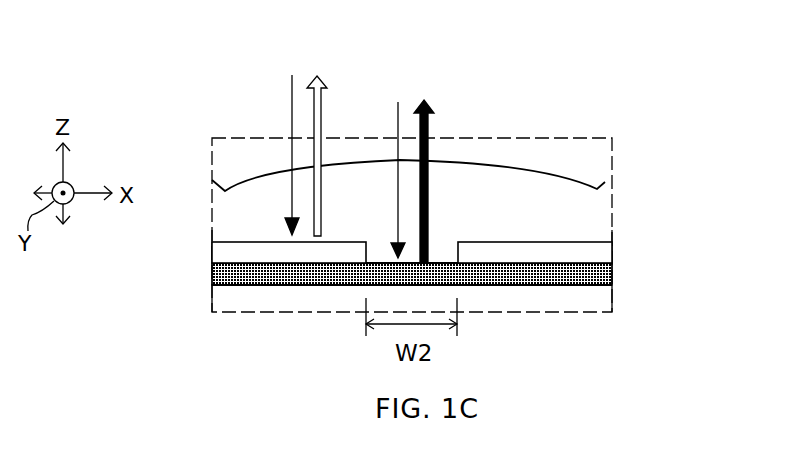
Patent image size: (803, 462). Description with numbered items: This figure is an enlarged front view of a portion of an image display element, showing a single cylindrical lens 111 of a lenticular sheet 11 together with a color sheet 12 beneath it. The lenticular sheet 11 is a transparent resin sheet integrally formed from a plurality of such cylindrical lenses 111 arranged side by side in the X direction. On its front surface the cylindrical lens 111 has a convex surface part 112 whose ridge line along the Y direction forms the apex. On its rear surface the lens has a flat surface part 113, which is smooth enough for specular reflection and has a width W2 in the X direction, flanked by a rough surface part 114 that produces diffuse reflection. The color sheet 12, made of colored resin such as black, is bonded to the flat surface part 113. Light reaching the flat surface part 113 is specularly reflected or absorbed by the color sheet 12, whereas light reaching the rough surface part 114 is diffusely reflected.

The lenticular sheet 11 is at (612, 216).
The color sheet 12 is at (612, 275).
The cylindrical lens 111 is at (598, 80).
The convex surface part 112 is at (563, 170).
The flat surface part 113 is at (452, 263).
The rough surface part 114 is at (310, 243).